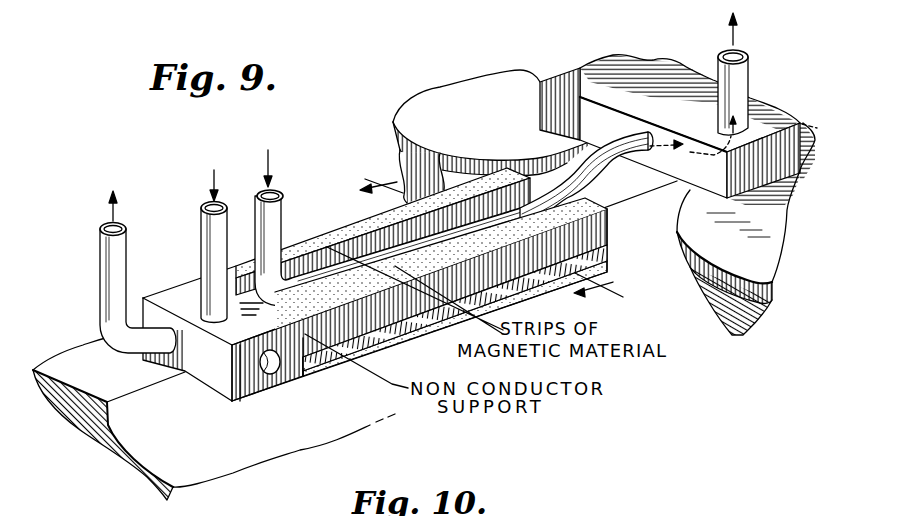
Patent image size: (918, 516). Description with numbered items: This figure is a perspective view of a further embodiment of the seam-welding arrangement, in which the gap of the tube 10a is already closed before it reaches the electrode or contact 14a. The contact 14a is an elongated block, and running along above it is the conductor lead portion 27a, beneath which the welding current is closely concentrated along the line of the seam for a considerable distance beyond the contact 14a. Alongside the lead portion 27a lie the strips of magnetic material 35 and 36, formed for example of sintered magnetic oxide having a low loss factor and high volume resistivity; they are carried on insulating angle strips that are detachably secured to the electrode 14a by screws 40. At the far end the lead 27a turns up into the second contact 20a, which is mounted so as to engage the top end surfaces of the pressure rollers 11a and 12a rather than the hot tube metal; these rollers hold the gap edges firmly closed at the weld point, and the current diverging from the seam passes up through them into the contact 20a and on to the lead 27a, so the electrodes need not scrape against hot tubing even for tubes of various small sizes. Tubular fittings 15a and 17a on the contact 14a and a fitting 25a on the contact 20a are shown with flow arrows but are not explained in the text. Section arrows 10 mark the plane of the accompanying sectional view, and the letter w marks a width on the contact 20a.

The tube 10a is at (145, 474).
The pressure roller 11a is at (703, 286).
The pressure roller 12a is at (433, 107).
The electrode or contact 14a is at (214, 388).
The inlet tube 15a is at (201, 232).
The outlet tube 17a is at (100, 250).
The contact 20a is at (614, 64).
The outlet tube 25a is at (748, 76).
The conductor lead portion 27a is at (277, 193).
The strip of magnetic material 35 is at (306, 257).
The strip of magnetic material 36 is at (397, 332).
The screws 40 is at (268, 376).
The section line 10- 10 is at (480, 243).
The width w is at (660, 186).